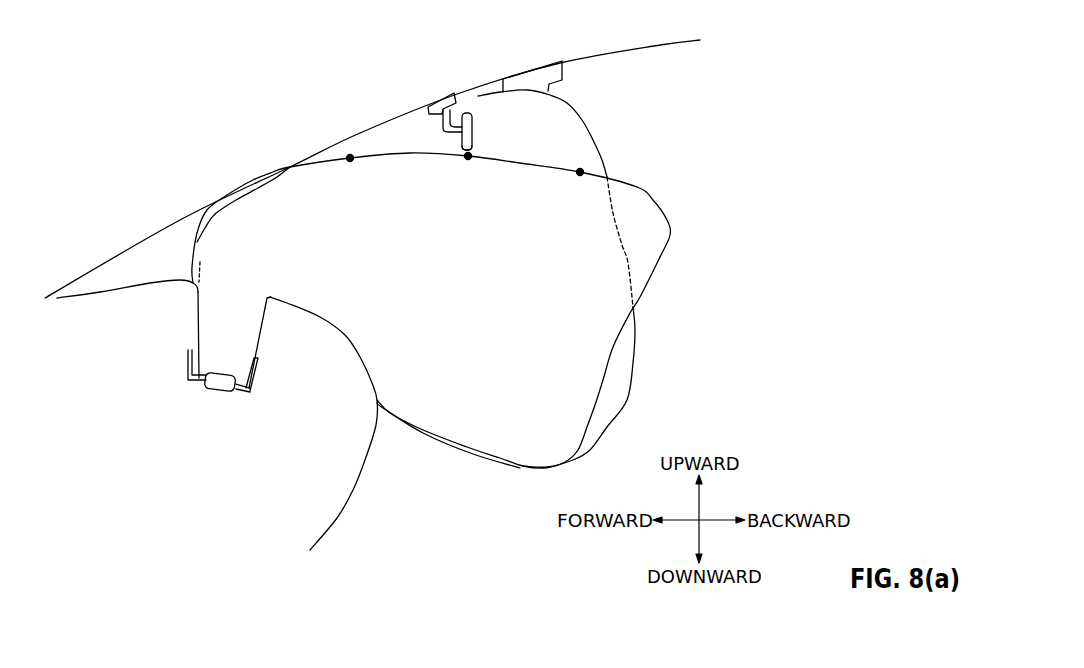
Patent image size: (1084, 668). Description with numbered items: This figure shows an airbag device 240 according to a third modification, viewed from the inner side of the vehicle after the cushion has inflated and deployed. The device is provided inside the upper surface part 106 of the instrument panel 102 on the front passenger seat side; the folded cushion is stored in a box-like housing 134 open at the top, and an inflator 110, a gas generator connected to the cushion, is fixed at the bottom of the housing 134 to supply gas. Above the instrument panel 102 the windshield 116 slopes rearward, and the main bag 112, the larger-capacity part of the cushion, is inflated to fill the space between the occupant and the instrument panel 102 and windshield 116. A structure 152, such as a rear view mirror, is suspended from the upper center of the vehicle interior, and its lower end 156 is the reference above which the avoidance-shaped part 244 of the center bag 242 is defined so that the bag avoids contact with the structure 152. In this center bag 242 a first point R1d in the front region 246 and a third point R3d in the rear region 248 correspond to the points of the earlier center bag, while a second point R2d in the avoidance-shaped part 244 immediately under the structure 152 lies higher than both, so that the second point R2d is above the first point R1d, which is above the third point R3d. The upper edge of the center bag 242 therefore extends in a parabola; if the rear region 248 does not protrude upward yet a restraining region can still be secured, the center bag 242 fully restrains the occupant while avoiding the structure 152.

The instrument panel 102 is at (353, 500).
The upper surface part 106 is at (291, 298).
The inflator 110 is at (216, 394).
The main bag 112 is at (567, 110).
The windshield 116 is at (102, 262).
The housing 134 is at (259, 380).
The structure 152 is at (467, 113).
The lower end 156 is at (464, 153).
The airbag device 240 is at (172, 146).
The center bag 242 is at (660, 222).
The avoidance-shaped part 244 is at (519, 157).
The front region 246 is at (290, 181).
The rear region 248 is at (637, 198).
The first point R1d is at (350, 158).
The second point R2d is at (452, 160).
The third point R3d is at (583, 170).